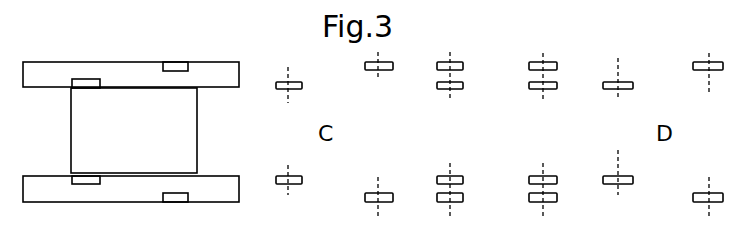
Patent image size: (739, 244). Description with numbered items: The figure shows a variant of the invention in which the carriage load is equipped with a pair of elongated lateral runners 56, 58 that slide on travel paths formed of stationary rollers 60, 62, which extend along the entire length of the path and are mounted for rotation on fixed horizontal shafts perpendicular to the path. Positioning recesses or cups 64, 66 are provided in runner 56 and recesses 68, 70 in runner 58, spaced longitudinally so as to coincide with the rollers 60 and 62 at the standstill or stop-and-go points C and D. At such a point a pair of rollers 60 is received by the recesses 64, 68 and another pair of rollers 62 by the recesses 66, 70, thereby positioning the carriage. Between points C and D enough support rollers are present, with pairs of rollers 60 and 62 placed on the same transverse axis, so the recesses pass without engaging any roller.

The lateral runner 56 is at (47, 72).
The lateral runner 58 is at (55, 192).
The rollers 60 is at (282, 175).
The rollers 62 is at (377, 195).
The positioning recess 64 is at (72, 88).
The positioning recess 66 is at (175, 64).
The positioning recess 68 is at (72, 177).
The positioning recess 70 is at (178, 202).